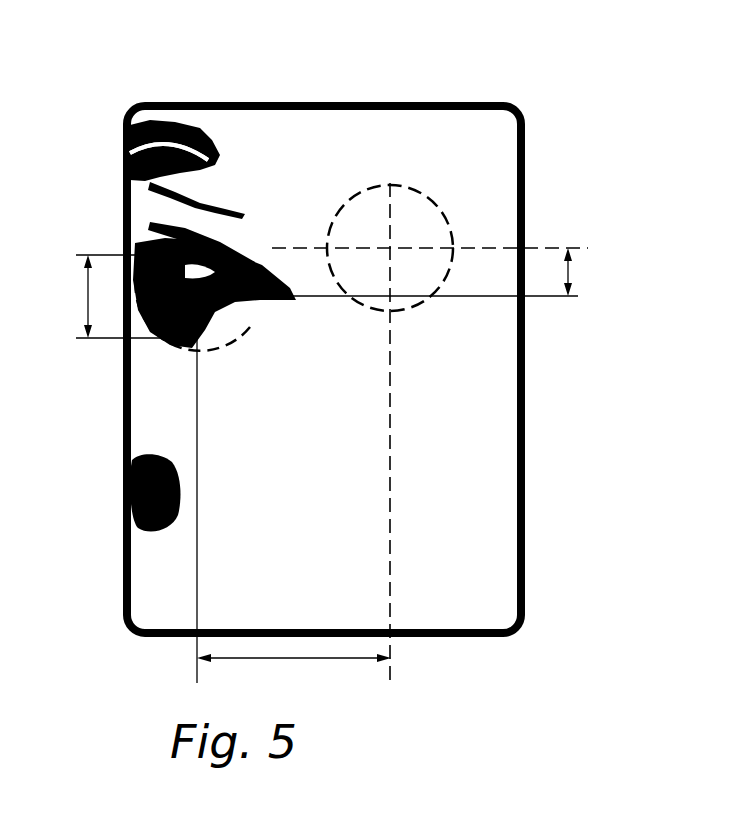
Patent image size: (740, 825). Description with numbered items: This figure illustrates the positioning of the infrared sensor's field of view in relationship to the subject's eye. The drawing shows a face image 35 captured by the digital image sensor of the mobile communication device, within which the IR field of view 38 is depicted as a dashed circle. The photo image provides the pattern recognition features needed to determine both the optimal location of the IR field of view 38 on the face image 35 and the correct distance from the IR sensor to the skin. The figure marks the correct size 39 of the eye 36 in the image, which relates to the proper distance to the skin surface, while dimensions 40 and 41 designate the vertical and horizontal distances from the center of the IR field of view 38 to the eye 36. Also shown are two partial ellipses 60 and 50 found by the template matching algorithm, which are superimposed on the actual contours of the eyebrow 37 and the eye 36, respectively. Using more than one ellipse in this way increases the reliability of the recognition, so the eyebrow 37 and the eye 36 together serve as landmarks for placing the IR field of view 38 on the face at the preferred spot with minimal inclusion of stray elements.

The face image 35 is at (500, 503).
The eye 36 is at (217, 327).
The eyebrow 37 is at (130, 160).
The IR field of view 38 is at (417, 303).
The size of the eye 39 is at (88, 283).
The dimension 40 is at (573, 270).
The dimension 41 is at (300, 660).
The partial ellipse 50 is at (243, 282).
The partial ellipse 60 is at (203, 152).